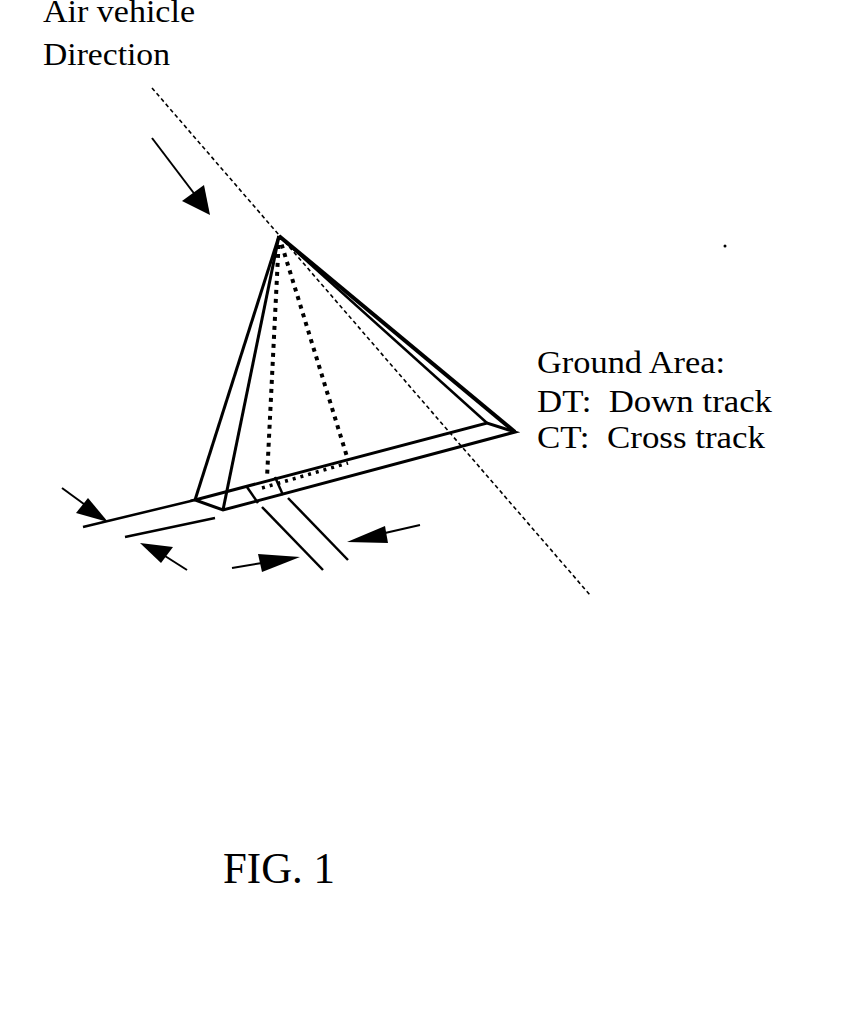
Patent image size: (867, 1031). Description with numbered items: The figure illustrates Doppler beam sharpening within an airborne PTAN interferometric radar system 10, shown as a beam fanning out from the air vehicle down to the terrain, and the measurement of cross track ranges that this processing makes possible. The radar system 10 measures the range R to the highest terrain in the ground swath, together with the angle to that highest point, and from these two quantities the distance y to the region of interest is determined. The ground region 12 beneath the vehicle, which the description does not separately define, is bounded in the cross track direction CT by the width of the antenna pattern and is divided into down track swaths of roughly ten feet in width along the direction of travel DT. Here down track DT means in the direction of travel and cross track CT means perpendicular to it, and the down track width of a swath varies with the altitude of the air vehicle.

The PTAN interferometric radar system 10 is at (278, 235).
The ground area footprint 12 is at (258, 503).
The range R is at (260, 357).
The distance y is at (305, 486).
The down track DT is at (138, 529).
The cross track CT is at (326, 551).